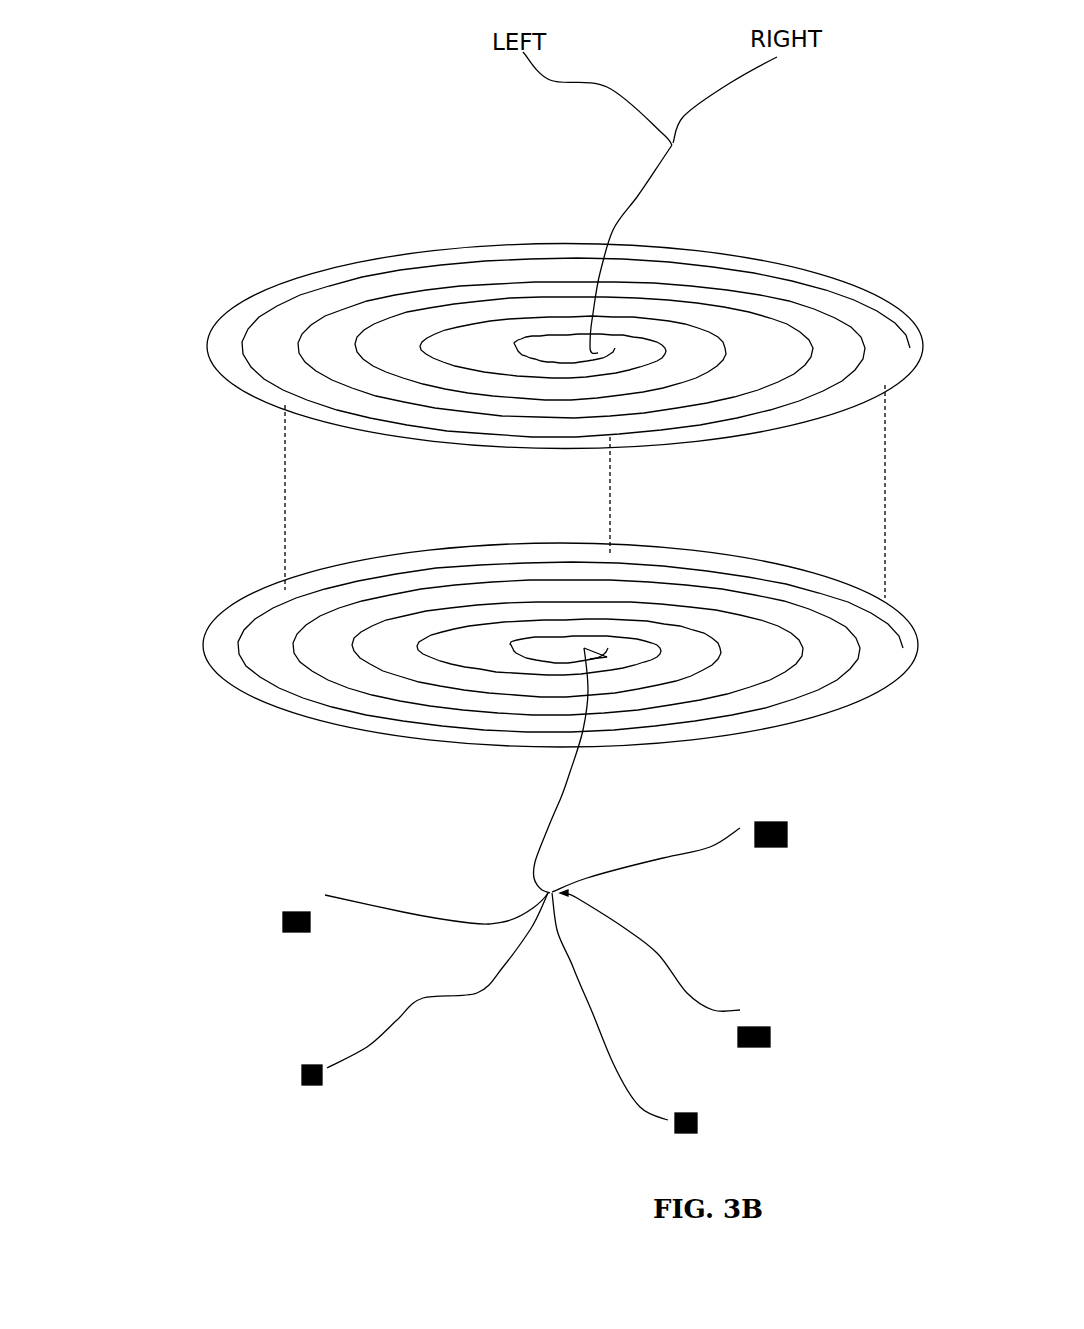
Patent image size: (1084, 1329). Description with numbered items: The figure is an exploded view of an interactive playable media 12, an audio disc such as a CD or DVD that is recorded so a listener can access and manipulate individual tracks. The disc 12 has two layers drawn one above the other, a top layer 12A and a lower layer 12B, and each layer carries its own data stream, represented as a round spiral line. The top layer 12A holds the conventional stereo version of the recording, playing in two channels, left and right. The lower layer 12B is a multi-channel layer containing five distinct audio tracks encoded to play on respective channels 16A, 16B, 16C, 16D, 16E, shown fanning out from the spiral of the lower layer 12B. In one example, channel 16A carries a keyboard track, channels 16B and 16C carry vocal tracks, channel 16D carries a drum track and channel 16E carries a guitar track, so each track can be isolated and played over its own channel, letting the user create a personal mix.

The playable media 12 is at (172, 332).
The top layer 12A is at (420, 307).
The lower layer 12B is at (347, 663).
The channel 16A is at (411, 908).
The channel 16B is at (420, 989).
The channel 16C is at (629, 1013).
The channel 16D is at (672, 968).
The channel 16E is at (674, 844).